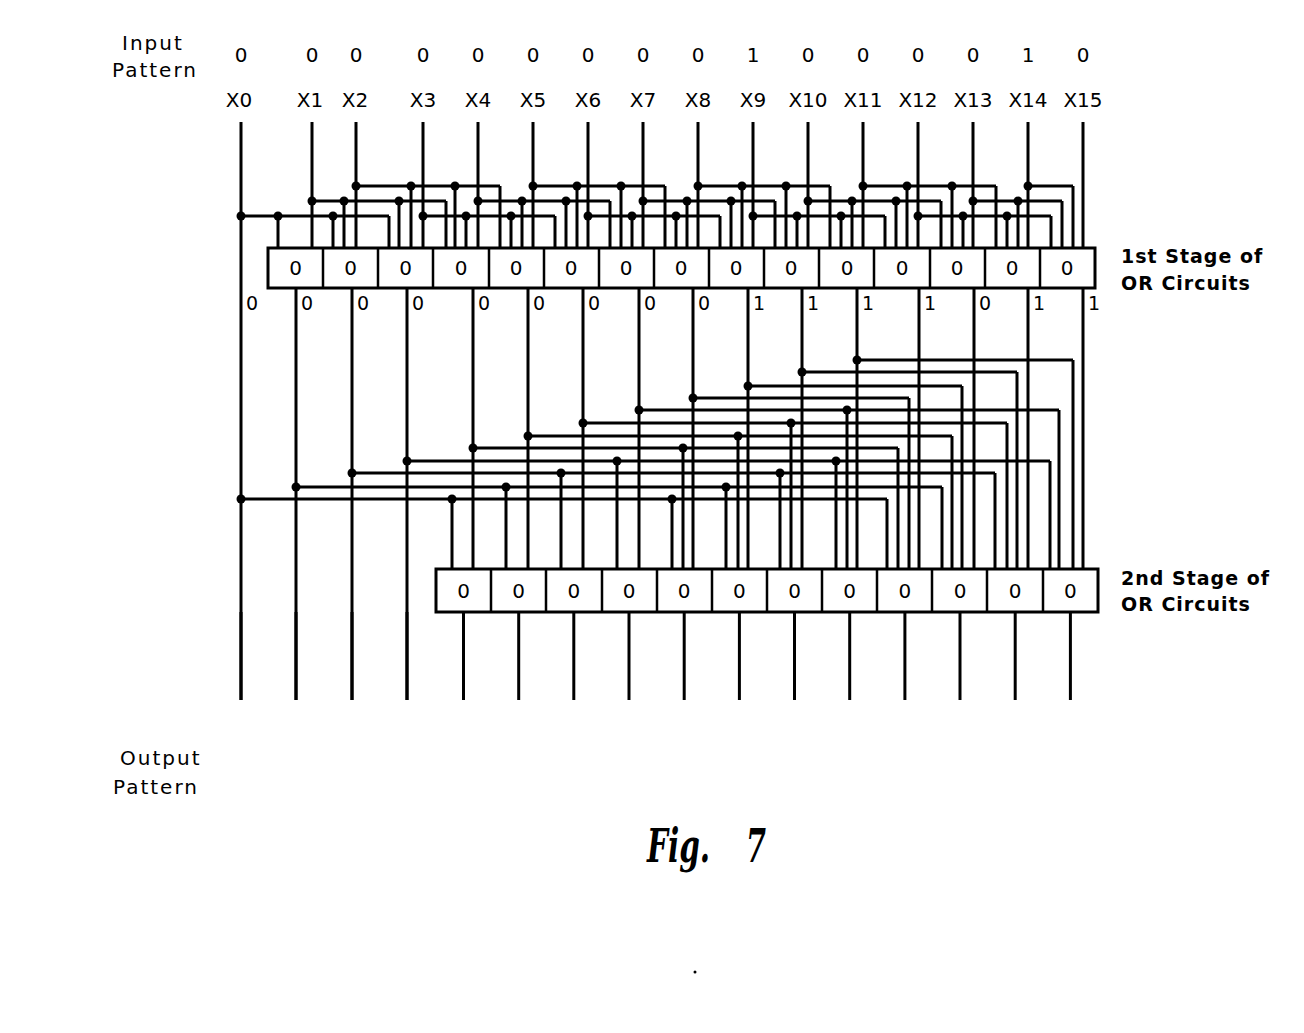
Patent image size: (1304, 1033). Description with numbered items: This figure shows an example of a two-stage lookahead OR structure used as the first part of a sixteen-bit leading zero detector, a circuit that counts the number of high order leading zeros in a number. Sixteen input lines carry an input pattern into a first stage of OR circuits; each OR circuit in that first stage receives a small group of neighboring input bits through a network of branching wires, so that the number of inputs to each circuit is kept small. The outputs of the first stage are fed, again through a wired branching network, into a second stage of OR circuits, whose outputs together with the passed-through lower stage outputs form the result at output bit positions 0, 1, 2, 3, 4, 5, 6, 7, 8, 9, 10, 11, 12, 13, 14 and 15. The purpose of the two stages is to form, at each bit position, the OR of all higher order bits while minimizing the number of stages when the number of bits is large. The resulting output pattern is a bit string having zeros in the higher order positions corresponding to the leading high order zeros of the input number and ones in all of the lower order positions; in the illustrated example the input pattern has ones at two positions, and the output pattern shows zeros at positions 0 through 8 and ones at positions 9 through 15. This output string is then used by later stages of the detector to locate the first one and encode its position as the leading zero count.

The output bit 0 is at (242, 698).
The output bit 1 is at (297, 698).
The output bit 2 is at (353, 698).
The output bit 3 is at (408, 698).
The output bit 4 is at (463, 698).
The output bit 5 is at (518, 698).
The output bit 6 is at (573, 698).
The output bit 7 is at (629, 698).
The output bit 8 is at (684, 698).
The output bit 9 is at (739, 698).
The output bit 10 is at (794, 698).
The output bit 11 is at (849, 698).
The output bit 12 is at (904, 698).
The output bit 13 is at (959, 698).
The output bit 14 is at (1014, 698).
The output bit 15 is at (1070, 698).